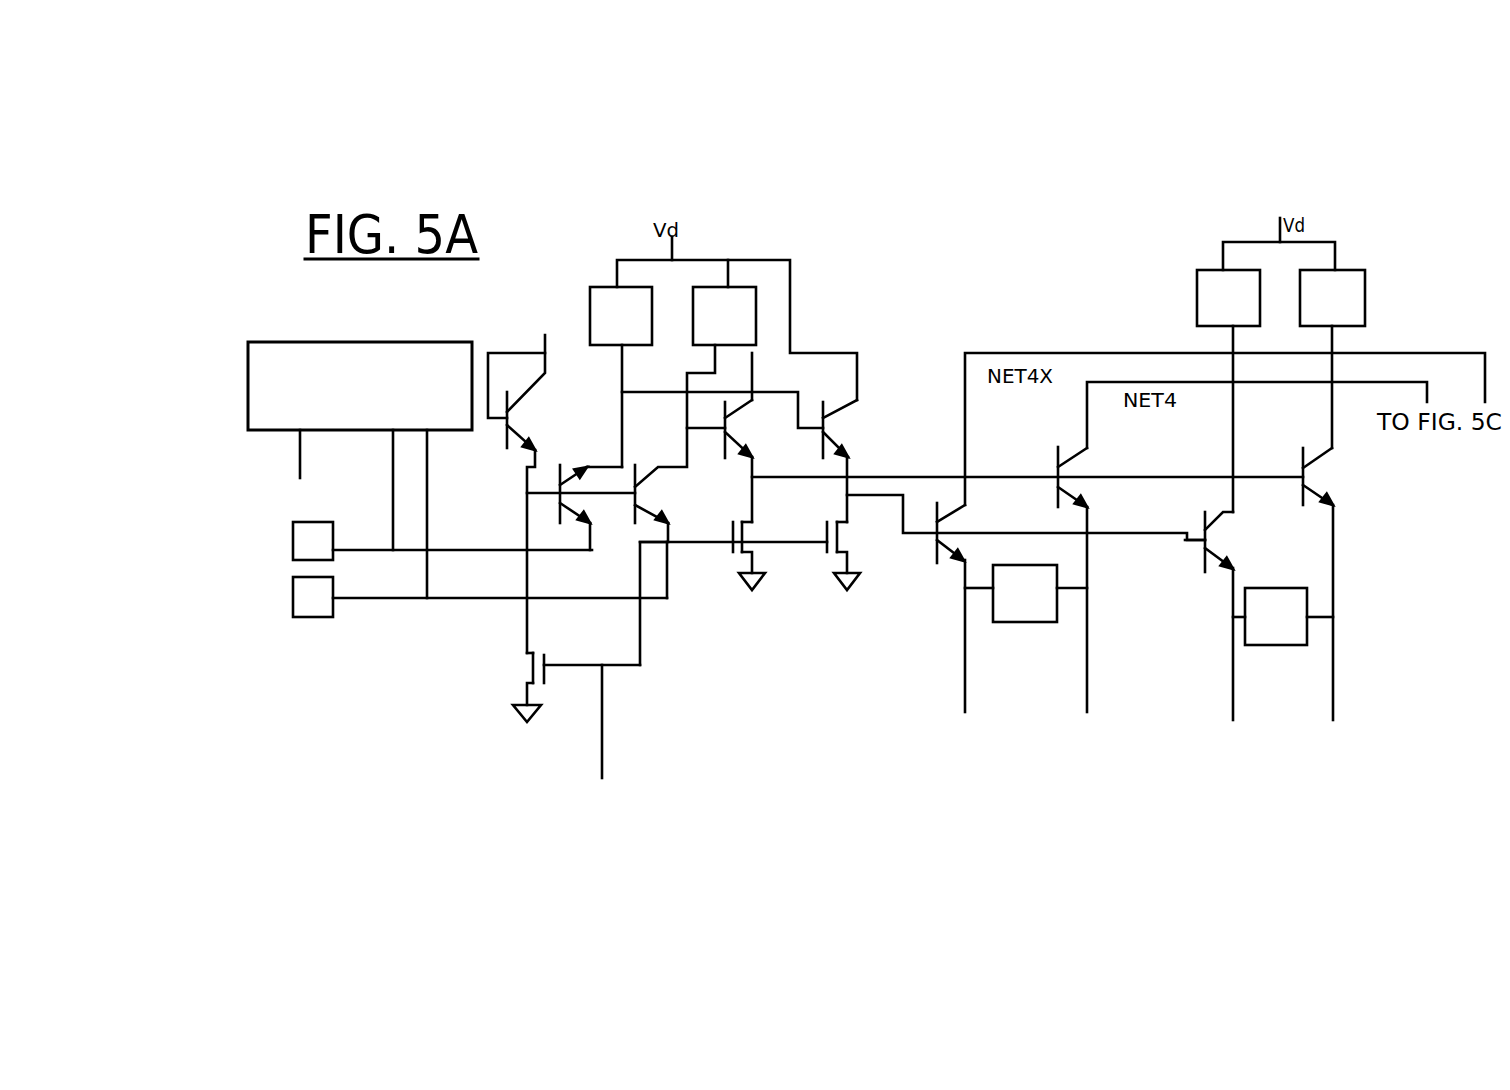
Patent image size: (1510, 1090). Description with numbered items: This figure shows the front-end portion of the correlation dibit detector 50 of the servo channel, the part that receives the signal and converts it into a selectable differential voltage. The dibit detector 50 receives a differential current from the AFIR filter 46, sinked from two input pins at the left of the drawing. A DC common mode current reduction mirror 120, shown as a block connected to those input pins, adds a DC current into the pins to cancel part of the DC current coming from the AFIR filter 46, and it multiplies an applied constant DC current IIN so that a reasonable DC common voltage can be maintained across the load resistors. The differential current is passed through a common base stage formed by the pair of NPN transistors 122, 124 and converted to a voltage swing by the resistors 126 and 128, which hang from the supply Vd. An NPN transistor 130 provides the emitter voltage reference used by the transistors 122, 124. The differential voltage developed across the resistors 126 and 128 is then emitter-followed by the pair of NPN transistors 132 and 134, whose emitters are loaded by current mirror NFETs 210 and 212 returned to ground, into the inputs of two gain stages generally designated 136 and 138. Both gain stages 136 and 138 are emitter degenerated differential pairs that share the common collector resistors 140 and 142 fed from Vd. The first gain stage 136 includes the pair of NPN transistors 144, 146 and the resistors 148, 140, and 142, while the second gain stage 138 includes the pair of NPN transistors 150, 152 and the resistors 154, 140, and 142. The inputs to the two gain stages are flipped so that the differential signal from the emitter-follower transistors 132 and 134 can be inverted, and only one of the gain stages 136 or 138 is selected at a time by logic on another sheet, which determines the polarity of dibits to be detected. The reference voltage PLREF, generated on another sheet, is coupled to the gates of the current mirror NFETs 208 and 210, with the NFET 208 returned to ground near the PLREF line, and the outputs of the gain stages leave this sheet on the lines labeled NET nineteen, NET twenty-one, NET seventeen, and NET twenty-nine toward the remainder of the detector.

The dibit detector 50 is at (302, 317).
The DC common mode current reduction mirror 120 is at (355, 470).
The AFIR filter 46 is at (417, 572).
The NPN transistor 130 is at (530, 484).
The NPN transistor 122 is at (581, 507).
The NPN transistor 124 is at (680, 505).
The resistor 128 is at (621, 377).
The resistor 126 is at (724, 316).
The NPN transistor 132 is at (751, 461).
The NPN transistor 134 is at (847, 461).
The current mirror NFET 210 is at (772, 556).
The MOS transistor 212 is at (866, 556).
The current mirror NFET 208 is at (570, 725).
The first gain stage 136 is at (935, 392).
The second gain stage 138 is at (1179, 452).
The NPN transistor 144 is at (966, 607).
The NPN transistor 146 is at (1088, 579).
The resistor 148 is at (1026, 593).
The NPN transistor 150 is at (1221, 616).
The NPN transistor 152 is at (1327, 584).
The common collector resistor 140 is at (1228, 391).
The common collector resistor 142 is at (1332, 359).
The resistor 154 is at (1283, 616).